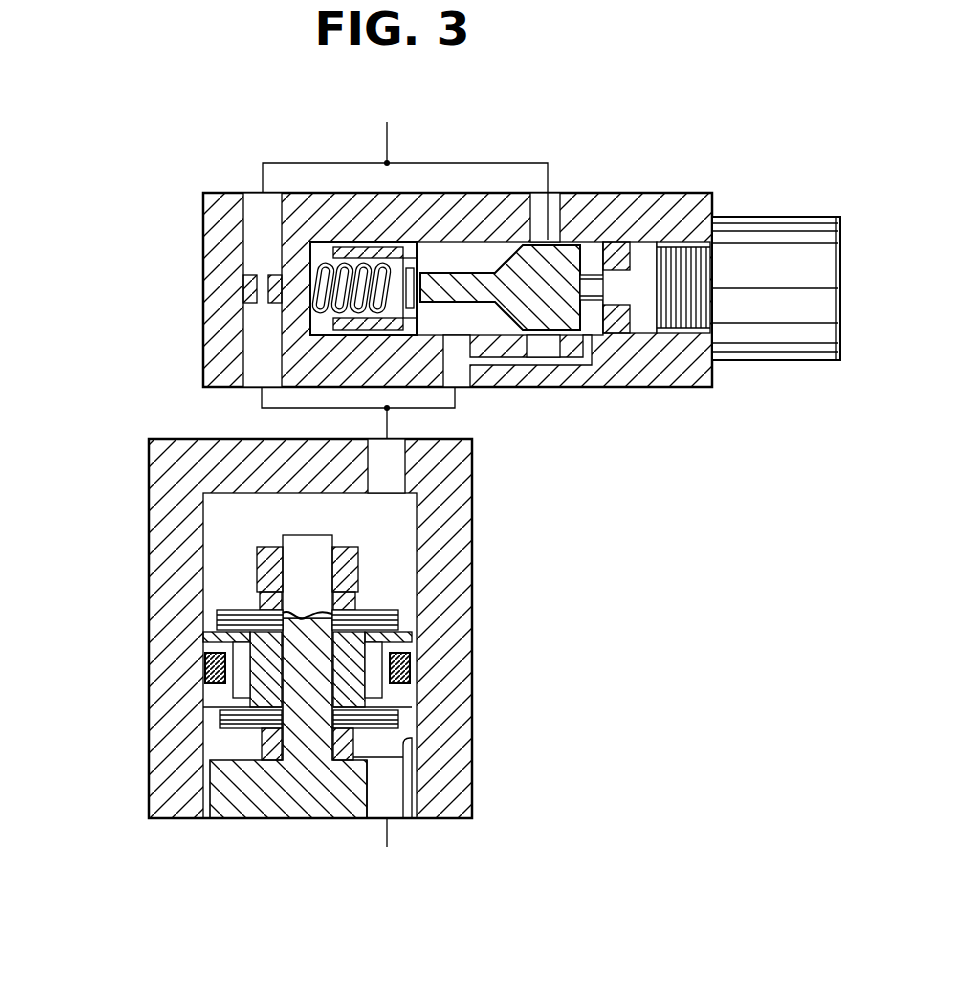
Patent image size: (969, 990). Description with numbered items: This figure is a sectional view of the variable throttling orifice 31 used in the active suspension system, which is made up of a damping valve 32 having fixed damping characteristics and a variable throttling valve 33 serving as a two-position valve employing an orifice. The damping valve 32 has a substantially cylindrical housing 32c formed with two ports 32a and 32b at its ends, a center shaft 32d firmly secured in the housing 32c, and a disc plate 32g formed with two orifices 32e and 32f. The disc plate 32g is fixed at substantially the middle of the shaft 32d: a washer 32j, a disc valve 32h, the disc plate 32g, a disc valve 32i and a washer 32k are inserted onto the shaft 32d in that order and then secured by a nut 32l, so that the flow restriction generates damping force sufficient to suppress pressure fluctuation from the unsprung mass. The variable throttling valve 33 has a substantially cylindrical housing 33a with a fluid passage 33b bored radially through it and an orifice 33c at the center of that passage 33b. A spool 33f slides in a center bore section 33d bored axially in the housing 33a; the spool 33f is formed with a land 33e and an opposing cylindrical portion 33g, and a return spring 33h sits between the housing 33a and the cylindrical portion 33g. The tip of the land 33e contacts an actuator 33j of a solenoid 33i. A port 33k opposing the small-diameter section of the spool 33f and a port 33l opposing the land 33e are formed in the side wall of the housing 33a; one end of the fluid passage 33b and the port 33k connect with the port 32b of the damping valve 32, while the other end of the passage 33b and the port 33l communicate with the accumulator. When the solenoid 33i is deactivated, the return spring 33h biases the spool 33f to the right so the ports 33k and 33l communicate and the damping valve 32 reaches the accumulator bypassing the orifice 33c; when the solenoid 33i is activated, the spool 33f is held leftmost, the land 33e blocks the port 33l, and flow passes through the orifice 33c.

The variable throttling orifice 31 is at (86, 330).
The damping valve 32 is at (167, 437).
The variable throttling valve 33 is at (188, 342).
The housing 33a is at (647, 207).
The fluid passage 33b is at (245, 192).
The orifice 33c is at (240, 290).
The center bore section 33d is at (462, 245).
The land 33e is at (578, 237).
The spool 33f is at (505, 197).
The cylindrical portion 33g is at (378, 252).
The return spring 33h is at (325, 243).
The solenoid 33i is at (773, 233).
The actuator 33j is at (617, 335).
The port 33k is at (460, 372).
The port 33l is at (562, 194).
The port 32a is at (378, 810).
The port 32b is at (393, 450).
The housing 32c is at (457, 707).
The center shaft 32d is at (312, 545).
The orifice 32e is at (395, 645).
The orifice 32f is at (243, 643).
The disc plate 32g is at (213, 695).
The disc valve 32h is at (207, 737).
The disc valve 32i is at (373, 612).
The washer 32j is at (357, 733).
The washer 32k is at (353, 598).
The nut 32l is at (267, 572).